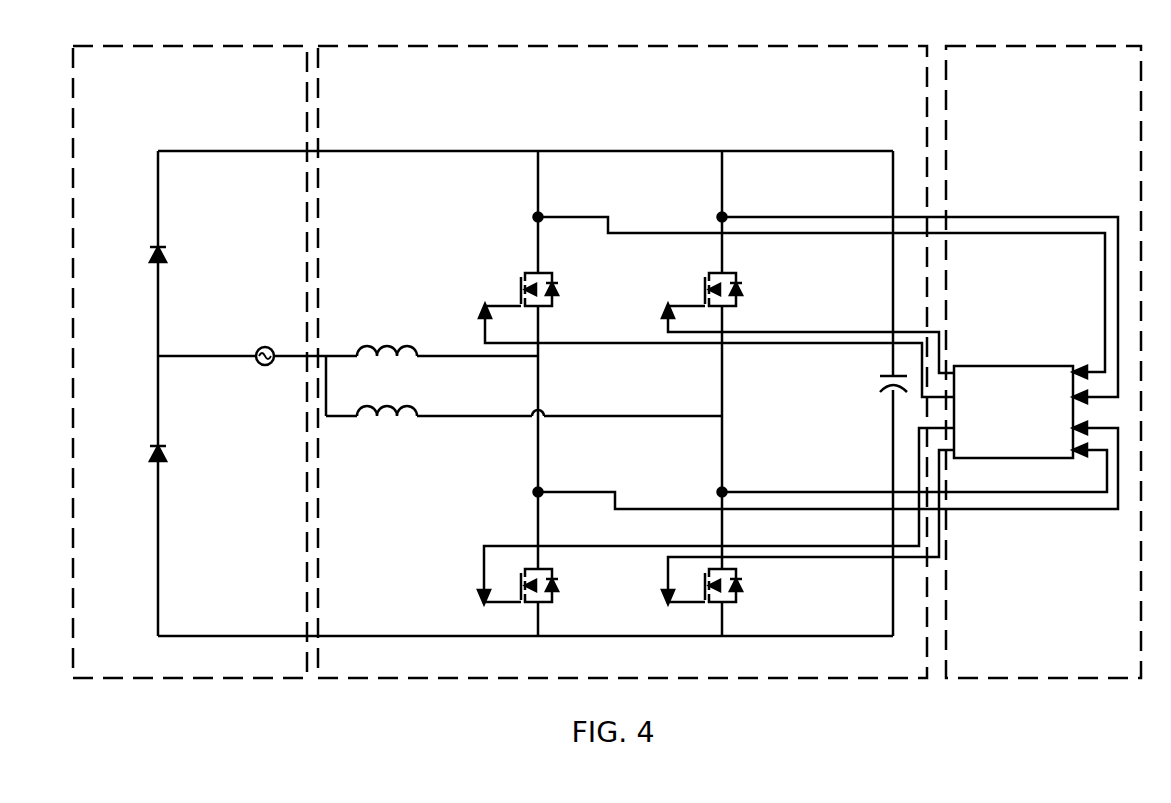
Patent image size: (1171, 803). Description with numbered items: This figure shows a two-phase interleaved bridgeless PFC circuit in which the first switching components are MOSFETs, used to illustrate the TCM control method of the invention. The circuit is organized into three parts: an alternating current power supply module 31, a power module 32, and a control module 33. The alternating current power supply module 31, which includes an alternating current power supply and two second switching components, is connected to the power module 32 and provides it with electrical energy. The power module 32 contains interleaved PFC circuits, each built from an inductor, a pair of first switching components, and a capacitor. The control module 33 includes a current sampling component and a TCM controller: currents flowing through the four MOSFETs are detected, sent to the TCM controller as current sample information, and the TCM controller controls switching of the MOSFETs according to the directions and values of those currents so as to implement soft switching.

The alternating current power supply module 31 is at (199, 362).
The power module 32 is at (638, 362).
The control module 33 is at (1043, 362).